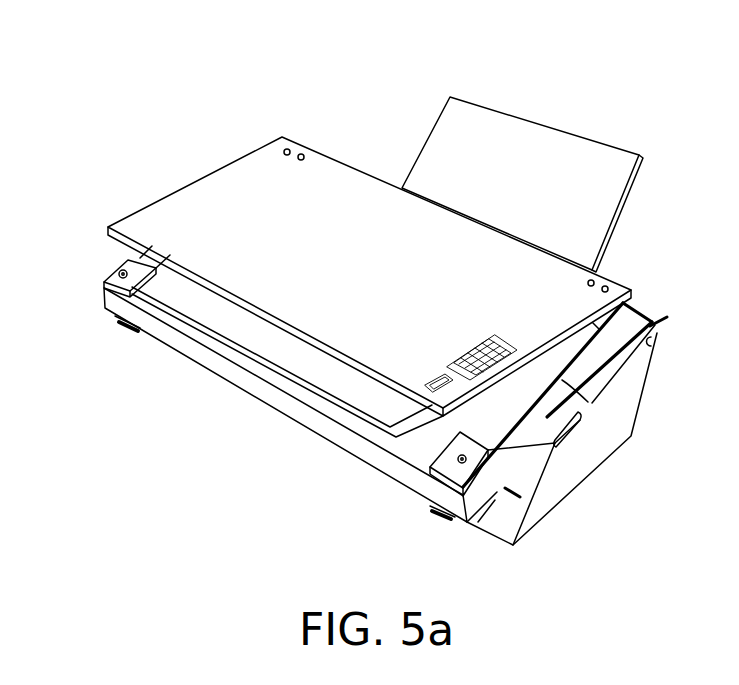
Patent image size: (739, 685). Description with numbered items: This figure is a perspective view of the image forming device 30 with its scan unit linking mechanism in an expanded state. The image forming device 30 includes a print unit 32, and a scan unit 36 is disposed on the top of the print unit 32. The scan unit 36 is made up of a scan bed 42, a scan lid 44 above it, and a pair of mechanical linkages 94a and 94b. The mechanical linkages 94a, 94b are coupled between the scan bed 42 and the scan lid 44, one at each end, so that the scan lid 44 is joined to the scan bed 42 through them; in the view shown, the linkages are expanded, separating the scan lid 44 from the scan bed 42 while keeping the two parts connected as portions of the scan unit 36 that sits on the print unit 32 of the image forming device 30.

The image forming device 30 is at (630, 29).
The print unit 32 is at (568, 480).
The scan unit 36 is at (119, 148).
The scan bed 42 is at (250, 383).
The scan lid 44 is at (260, 182).
The mechanical linkage 94a is at (593, 405).
The mechanical linkage 94b is at (123, 265).